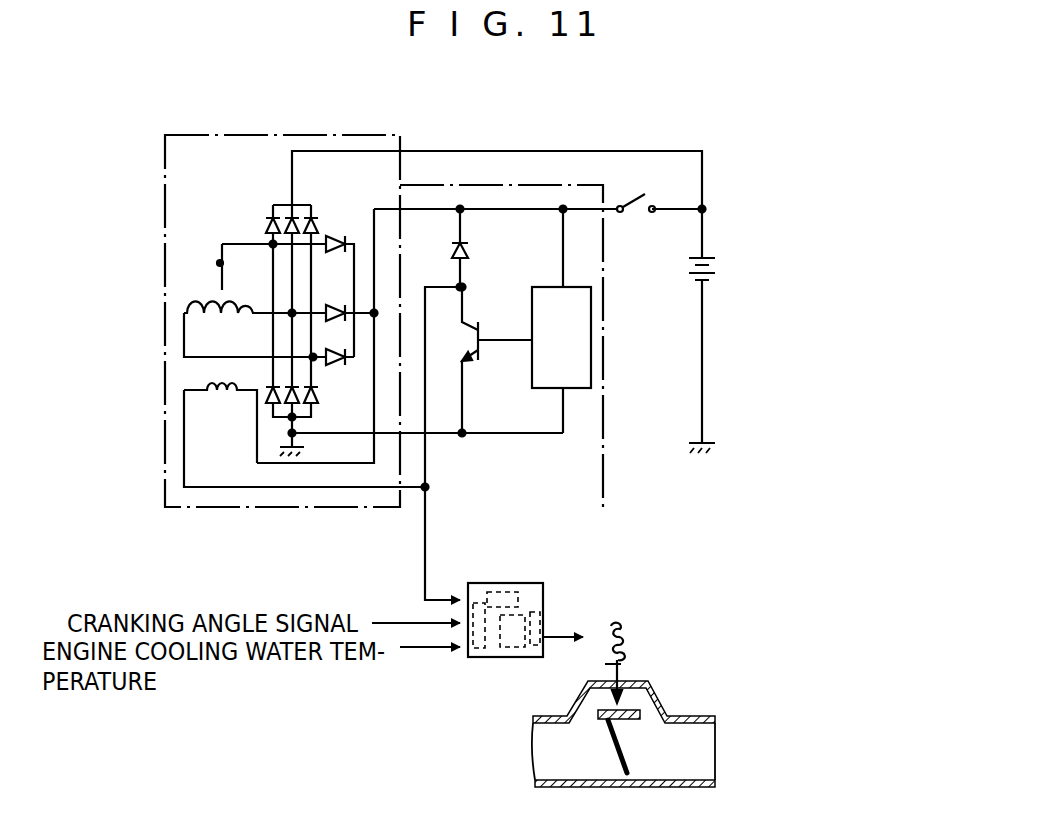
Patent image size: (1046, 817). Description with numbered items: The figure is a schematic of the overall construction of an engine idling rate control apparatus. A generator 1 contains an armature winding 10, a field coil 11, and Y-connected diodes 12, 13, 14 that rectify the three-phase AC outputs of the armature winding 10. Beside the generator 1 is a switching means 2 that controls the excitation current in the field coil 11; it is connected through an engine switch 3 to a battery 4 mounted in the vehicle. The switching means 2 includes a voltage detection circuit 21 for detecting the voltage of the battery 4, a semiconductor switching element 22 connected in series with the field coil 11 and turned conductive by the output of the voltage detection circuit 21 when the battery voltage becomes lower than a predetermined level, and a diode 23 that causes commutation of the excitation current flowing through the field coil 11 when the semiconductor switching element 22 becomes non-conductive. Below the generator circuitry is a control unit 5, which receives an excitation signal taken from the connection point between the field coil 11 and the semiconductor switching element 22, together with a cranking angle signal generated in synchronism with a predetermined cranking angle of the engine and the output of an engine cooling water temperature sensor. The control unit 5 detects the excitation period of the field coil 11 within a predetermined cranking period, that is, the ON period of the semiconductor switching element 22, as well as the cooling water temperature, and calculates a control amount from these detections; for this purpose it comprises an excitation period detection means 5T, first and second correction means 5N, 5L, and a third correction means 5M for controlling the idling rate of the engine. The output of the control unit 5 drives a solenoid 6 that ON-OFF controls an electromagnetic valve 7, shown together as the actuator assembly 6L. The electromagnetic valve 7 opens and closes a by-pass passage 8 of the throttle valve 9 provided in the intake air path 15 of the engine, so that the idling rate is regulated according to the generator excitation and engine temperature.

The generator 1 is at (292, 134).
The switching means 2 is at (505, 185).
The engine switch 3 is at (642, 196).
The battery 4 is at (724, 266).
The control unit 5 is at (507, 583).
The first correction means 5N is at (540, 595).
The excitation period detection means 5T is at (478, 658).
The second correction means 5L is at (512, 656).
The third correction means 5M is at (542, 664).
The solenoid 6 is at (622, 645).
The load control device 6L is at (629, 616).
The electromagnetic valve 7 is at (620, 622).
The by-pass passage 8 is at (640, 700).
The throttle valve 9 is at (626, 758).
The armature winding 10 is at (220, 262).
The field coil 11 is at (220, 404).
The diodes 12 is at (328, 196).
The diodes 13 is at (342, 234).
The diodes 14 is at (322, 402).
The intake air path 15 is at (700, 714).
The voltage detection circuit 21 is at (550, 390).
The semiconductor switching element 22 is at (470, 362).
The diode 23 is at (472, 252).